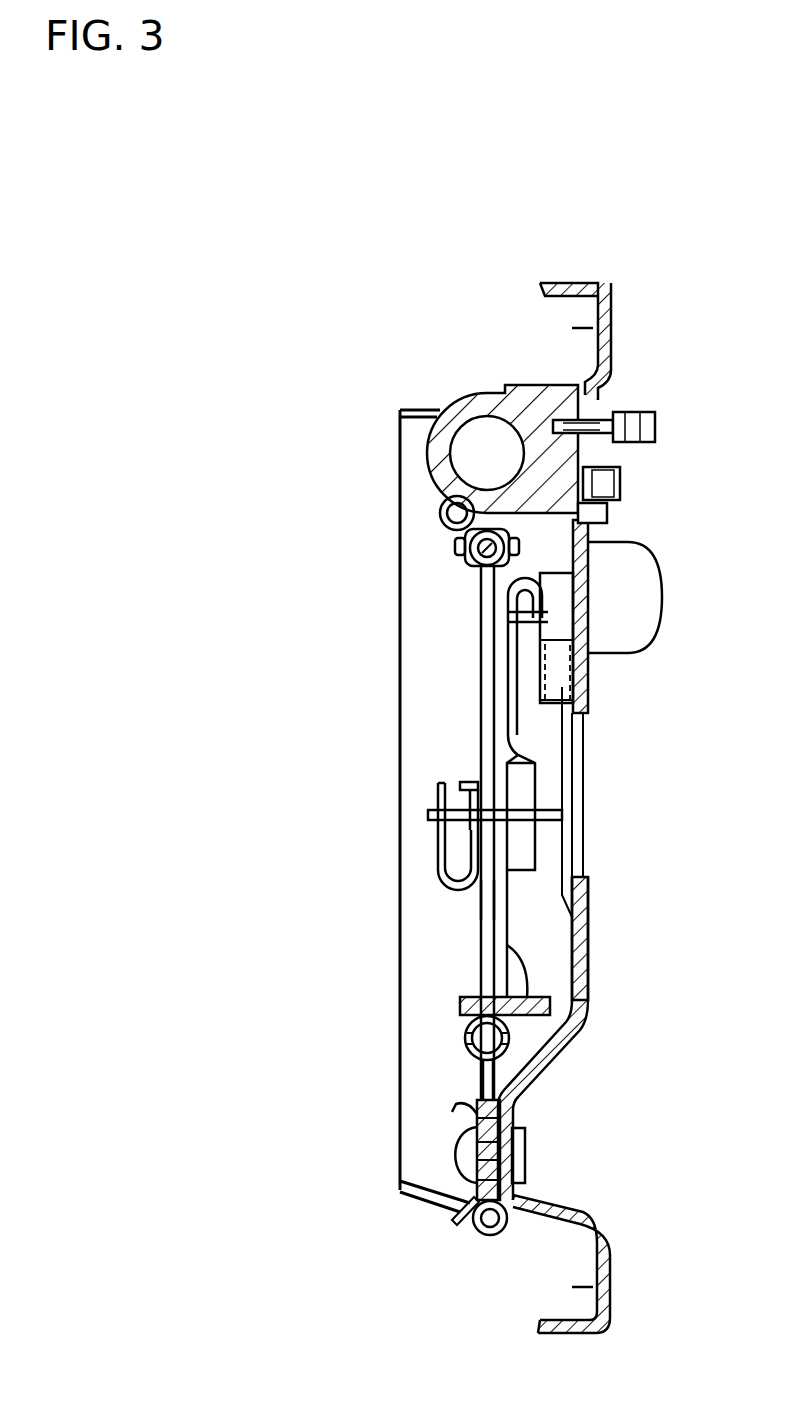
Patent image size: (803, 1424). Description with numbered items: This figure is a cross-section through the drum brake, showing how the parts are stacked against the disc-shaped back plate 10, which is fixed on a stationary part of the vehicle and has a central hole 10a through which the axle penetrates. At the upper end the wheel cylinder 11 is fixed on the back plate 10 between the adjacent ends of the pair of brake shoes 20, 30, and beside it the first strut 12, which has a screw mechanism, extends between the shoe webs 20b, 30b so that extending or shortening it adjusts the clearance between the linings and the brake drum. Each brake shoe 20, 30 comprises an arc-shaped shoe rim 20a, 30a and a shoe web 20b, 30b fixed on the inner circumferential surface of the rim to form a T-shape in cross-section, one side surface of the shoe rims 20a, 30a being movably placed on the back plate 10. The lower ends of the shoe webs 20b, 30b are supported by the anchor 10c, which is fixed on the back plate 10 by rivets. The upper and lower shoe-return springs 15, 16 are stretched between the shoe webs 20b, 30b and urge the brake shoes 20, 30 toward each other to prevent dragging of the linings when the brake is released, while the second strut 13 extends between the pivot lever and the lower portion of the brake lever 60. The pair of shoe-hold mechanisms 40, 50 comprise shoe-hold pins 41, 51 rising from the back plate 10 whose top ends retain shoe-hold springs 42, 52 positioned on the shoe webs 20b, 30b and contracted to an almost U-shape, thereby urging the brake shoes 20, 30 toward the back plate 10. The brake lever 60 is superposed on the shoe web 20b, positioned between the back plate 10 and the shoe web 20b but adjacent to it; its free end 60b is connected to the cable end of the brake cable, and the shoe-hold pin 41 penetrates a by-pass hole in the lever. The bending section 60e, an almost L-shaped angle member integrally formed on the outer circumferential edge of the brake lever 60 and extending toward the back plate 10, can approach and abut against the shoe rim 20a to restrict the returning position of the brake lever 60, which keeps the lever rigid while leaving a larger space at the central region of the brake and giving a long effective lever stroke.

The back plate 10 is at (590, 987).
The central hole 10a is at (583, 857).
The anchor 10c is at (477, 1153).
The wheel cylinder 11 is at (470, 398).
The first strut 12 is at (458, 560).
The second strut 13 is at (462, 1005).
The upper shoe-return spring 15 is at (445, 523).
The lower shoe-return spring 16 is at (466, 1034).
The brake shoe 20 is at (337, 811).
The brake shoe 30 is at (397, 951).
The shoe rim 20a is at (360, 860).
The shoe rim 30a is at (438, 874).
The shoe web 20b is at (368, 902).
The shoe web 30b is at (482, 900).
The shoe-hold mechanism 40 is at (357, 780).
The shoe-hold mechanism 50 is at (357, 780).
The shoe-hold pin 41 is at (421, 775).
The shoe-hold pin 51 is at (457, 807).
The shoe-hold spring 42 is at (379, 810).
The shoe-hold spring 52 is at (438, 838).
The brake lever 60 is at (494, 637).
The free end 60b is at (508, 580).
The bending section 60e is at (528, 790).